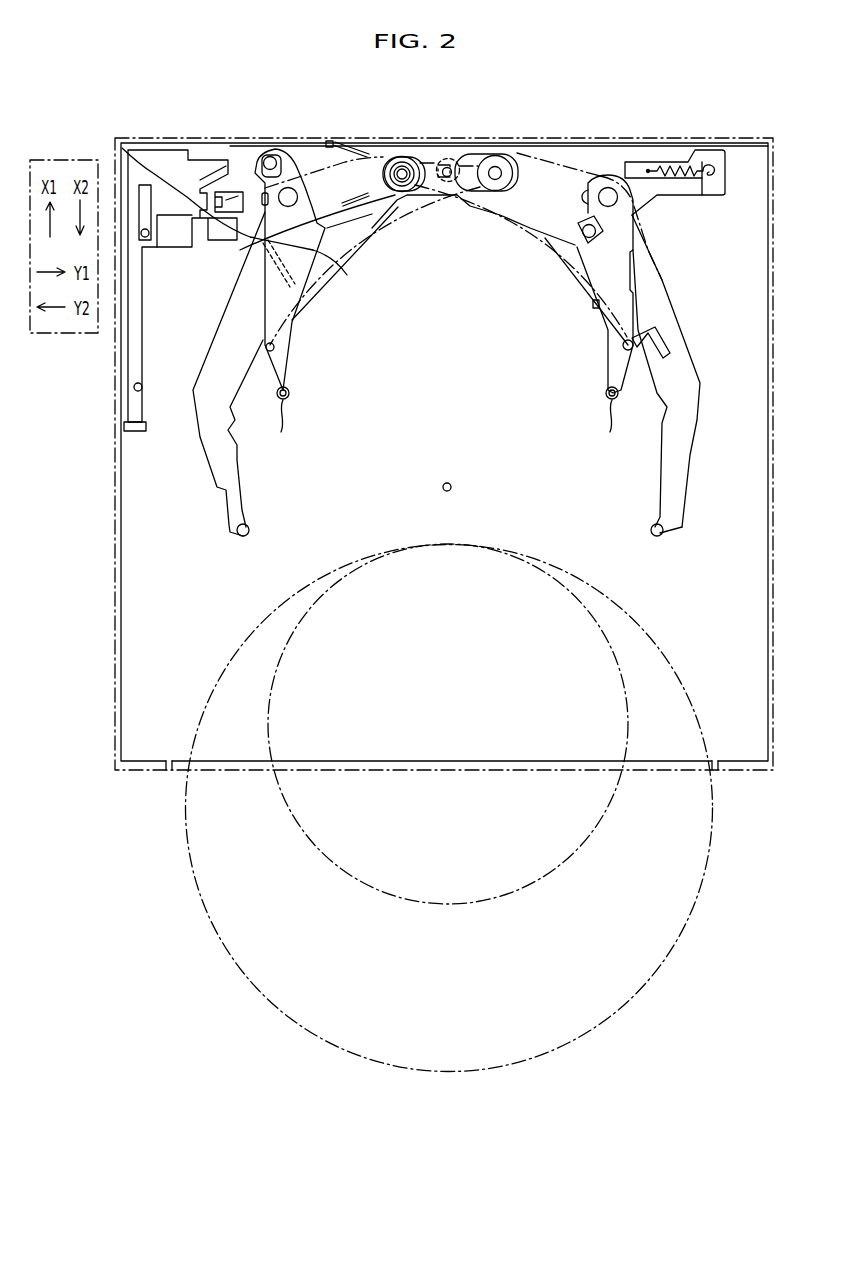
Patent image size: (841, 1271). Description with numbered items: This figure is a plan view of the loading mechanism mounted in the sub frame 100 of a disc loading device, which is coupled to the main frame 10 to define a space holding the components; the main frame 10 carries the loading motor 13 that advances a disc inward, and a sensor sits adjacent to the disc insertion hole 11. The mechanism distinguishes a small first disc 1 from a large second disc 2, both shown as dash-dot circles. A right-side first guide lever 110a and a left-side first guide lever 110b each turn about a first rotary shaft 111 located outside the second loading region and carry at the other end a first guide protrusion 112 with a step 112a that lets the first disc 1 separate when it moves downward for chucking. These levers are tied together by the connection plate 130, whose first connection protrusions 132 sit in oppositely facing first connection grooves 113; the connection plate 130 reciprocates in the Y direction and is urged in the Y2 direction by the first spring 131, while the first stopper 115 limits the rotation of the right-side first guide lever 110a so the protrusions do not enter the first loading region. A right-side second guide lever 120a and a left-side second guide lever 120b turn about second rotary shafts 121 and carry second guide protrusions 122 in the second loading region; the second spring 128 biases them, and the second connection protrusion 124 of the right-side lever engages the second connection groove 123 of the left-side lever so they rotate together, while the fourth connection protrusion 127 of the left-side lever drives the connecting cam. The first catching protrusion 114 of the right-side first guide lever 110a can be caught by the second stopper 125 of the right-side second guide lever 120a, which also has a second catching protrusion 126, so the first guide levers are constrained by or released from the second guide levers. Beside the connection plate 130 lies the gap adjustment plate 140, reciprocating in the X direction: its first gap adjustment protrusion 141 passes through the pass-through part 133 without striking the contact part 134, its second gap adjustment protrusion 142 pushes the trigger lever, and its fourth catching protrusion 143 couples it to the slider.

The first disc 1 is at (602, 818).
The second disc 2 is at (712, 830).
The main frame 10 is at (750, 705).
The disc insertion hole 11 is at (176, 771).
The loading motor 13 is at (578, 230).
The sub frame 100 is at (735, 772).
The right-side first guide lever 110a is at (609, 333).
The left-side first guide lever 110b is at (292, 330).
The first rotary shaft 111 is at (289, 194).
The first guide protrusion 112 is at (442, 428).
The step 112a is at (290, 393).
The first connection groove 113 is at (264, 180).
The first catching protrusion 114 is at (626, 348).
The first stopper 115 is at (592, 303).
The right-side second guide lever 120a is at (690, 447).
The left-side second guide lever 120b is at (207, 443).
The second rotary shaft 121 is at (401, 172).
The second guide protrusion 122 is at (250, 530).
The second connection groove 123 is at (443, 166).
The second connection protrusion 124 is at (452, 168).
The second stopper 125 is at (634, 340).
The second catching protrusion 126 is at (670, 348).
The fourth connection protrusion 127 is at (245, 248).
The second spring 128 is at (363, 152).
The connection plate 130 is at (577, 150).
The first spring 131 is at (672, 170).
The first connection protrusion 132 is at (272, 158).
The pass-through part 133 is at (317, 249).
The contact part 134 is at (128, 155).
The gap adjustment plate 140 is at (160, 157).
The first gap adjustment protrusion 141 is at (227, 160).
The second gap adjustment protrusion 142 is at (189, 238).
The fourth catching protrusion 143 is at (128, 428).